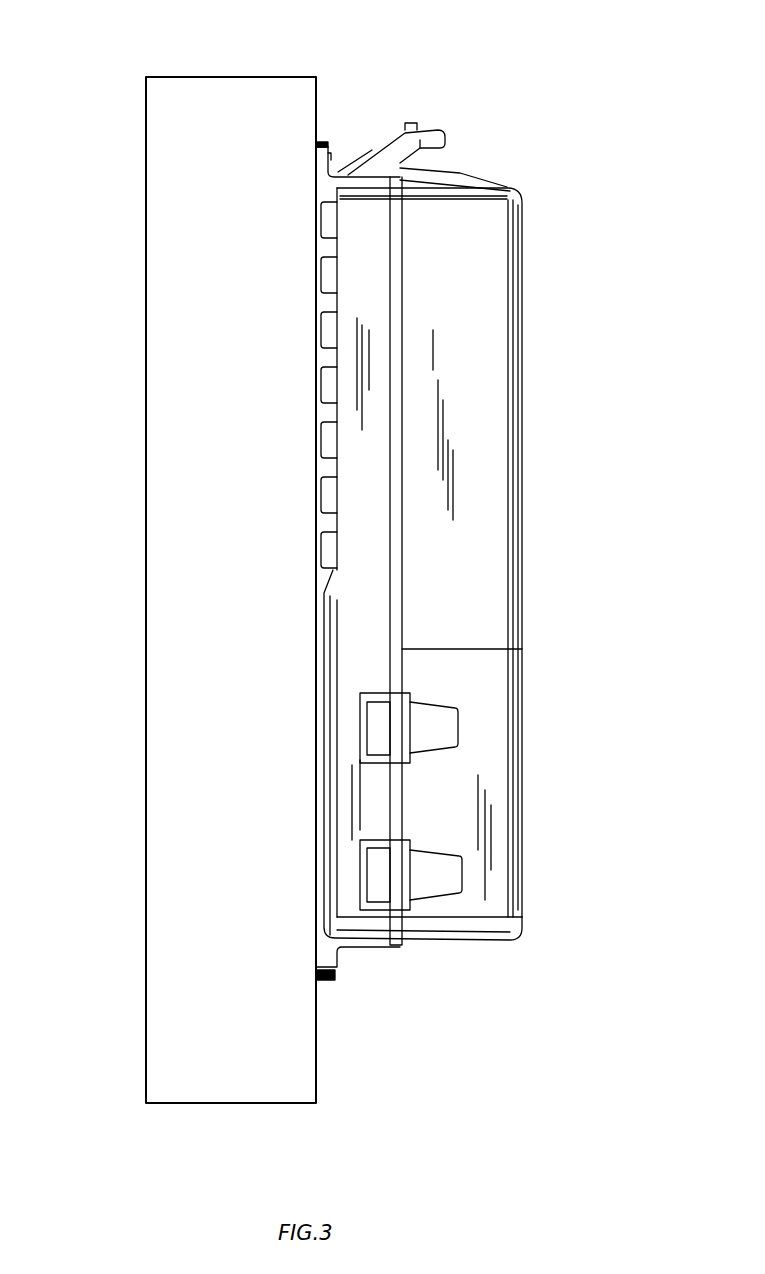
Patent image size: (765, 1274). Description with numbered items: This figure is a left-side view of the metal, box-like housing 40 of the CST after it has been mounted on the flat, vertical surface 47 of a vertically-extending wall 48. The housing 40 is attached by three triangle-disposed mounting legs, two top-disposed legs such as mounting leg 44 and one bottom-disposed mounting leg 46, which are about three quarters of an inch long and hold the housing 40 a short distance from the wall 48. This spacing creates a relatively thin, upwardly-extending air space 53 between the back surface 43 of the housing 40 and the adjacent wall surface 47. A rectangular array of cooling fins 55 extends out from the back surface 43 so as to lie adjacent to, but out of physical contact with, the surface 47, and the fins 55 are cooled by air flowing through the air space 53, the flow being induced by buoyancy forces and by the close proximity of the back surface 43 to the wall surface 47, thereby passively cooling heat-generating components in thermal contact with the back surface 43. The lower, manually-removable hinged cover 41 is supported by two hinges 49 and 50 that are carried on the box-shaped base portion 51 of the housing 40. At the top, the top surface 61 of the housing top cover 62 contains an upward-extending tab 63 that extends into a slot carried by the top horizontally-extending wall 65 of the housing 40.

The housing 40 is at (533, 182).
The hinged cover 41 is at (480, 797).
The back surface 43 is at (320, 360).
The top-disposed mounting leg 44 is at (328, 165).
The bottom-disposed mounting leg 46 is at (330, 963).
The surface 47 is at (316, 93).
The wall 48 is at (165, 830).
The hinge 49 is at (443, 723).
The hinge 50 is at (433, 877).
The base portion 51 is at (362, 285).
The air space 53 is at (322, 467).
The cooling fins 55 is at (330, 382).
The top surface 61 is at (477, 193).
The top cover 62 is at (523, 312).
The tab 63 is at (420, 122).
The top horizontally-extending wall 65 is at (377, 160).